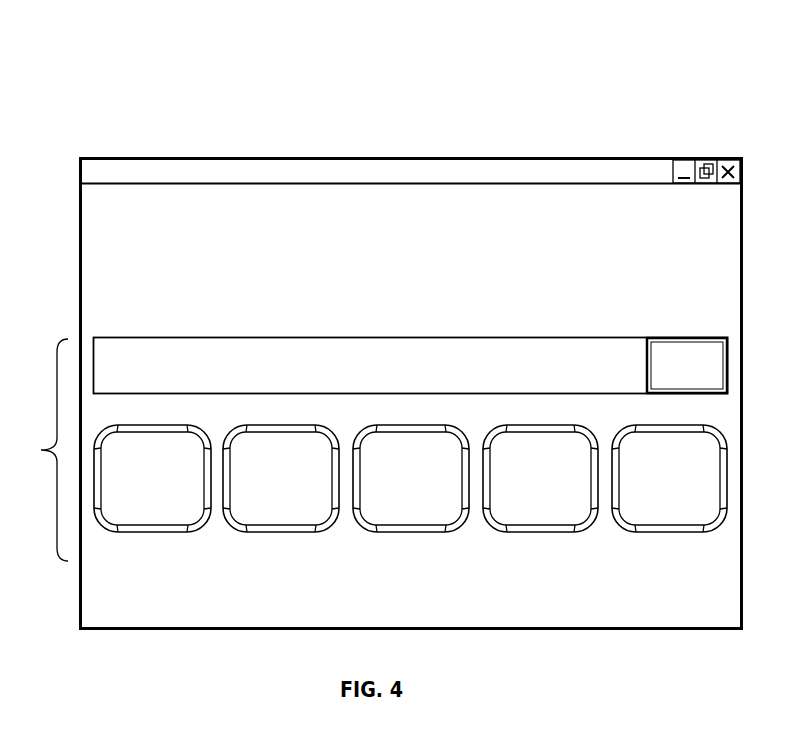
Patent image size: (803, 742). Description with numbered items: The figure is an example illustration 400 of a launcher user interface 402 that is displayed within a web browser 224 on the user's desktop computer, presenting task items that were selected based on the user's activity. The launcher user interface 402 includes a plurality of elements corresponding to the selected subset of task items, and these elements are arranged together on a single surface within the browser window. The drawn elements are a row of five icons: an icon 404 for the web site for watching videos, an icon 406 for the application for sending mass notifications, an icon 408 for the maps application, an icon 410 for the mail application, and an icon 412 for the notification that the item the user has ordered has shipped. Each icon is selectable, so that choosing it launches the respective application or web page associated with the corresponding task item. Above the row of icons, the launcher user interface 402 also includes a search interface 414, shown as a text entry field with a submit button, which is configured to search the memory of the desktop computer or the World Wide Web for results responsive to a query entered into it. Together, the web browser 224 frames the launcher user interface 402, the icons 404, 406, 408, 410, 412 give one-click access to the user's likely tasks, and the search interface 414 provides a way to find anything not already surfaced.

The example illustration 400 is at (98, 46).
The web browser 224 is at (146, 148).
The launcher user interface 402 is at (366, 450).
The icon for the web site for watching videos 404 is at (150, 533).
The icon for the application for sending mass notifications 406 is at (280, 533).
The icon for the maps application 408 is at (410, 533).
The icon for the mail application 410 is at (544, 533).
The icon for the notification that the ordered item has shipped 412 is at (672, 533).
The search interface 414 is at (150, 336).